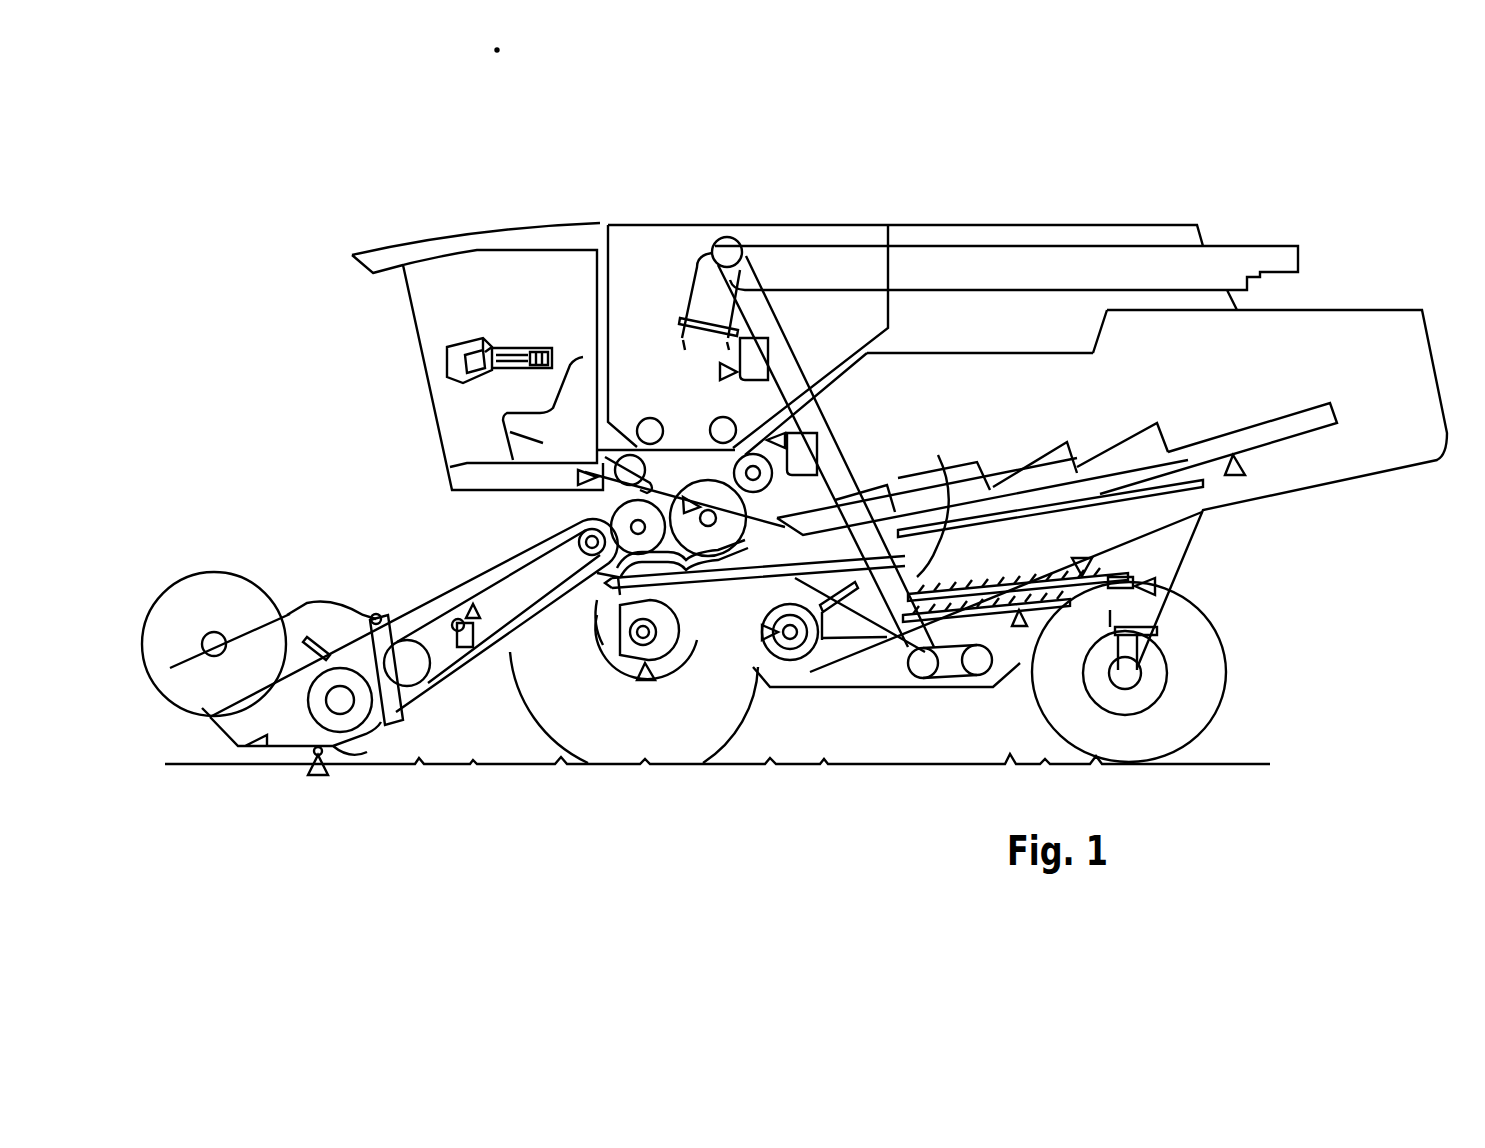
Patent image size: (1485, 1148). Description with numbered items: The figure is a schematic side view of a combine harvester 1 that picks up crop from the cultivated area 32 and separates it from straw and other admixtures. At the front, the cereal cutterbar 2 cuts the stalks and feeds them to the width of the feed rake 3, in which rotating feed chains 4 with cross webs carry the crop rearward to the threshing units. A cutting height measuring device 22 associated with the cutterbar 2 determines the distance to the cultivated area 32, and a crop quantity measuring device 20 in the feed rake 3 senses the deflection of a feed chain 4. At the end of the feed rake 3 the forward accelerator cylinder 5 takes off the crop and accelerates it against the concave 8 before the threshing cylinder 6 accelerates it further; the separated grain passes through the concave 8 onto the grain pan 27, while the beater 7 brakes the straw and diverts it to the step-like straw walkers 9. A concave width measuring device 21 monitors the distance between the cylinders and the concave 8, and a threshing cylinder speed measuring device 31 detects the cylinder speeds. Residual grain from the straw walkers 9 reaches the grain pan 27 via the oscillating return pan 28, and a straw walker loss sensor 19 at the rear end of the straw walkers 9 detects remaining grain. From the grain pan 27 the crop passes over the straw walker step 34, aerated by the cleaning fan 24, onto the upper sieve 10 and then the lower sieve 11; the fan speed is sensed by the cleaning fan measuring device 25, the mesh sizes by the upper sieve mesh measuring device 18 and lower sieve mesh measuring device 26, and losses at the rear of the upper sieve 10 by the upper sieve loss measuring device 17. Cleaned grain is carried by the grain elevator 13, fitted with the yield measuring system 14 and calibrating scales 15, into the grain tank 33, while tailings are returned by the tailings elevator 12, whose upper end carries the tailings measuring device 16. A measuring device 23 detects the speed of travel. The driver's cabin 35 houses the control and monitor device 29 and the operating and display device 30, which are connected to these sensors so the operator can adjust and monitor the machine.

The combine harvester 1 is at (388, 236).
The cereal cutterbar 2 is at (295, 600).
The feed rake 3 is at (455, 588).
The feed chains 4 is at (497, 570).
The forward accelerator cylinder 5 is at (627, 520).
The threshing cylinder 6 is at (713, 486).
The beater 7 is at (745, 462).
The concave 8 is at (690, 565).
The straw walkers 9 is at (1053, 463).
The upper sieve 10 is at (1008, 582).
The lower sieve 11 is at (1063, 610).
The tailings elevator 12 is at (955, 662).
The grain elevator 13 is at (907, 650).
The yield measuring system 14 is at (718, 372).
The calibrating scales 15 is at (775, 427).
The tailings measuring device 16 is at (577, 478).
The upper sieve loss measuring device 17 is at (1157, 587).
The upper sieve mesh measuring device 18 is at (1080, 557).
The straw walker loss sensor 19 is at (1237, 476).
The crop quantity measuring device 20 is at (473, 620).
The concave width measuring device 21 is at (610, 640).
The cutting height measuring device 22 is at (318, 775).
The measuring device for detecting the speed of travel 23 is at (645, 682).
The cleaning fan 24 is at (790, 650).
The cleaning fan measuring device 25 is at (762, 634).
The lower sieve mesh measuring device 26 is at (1019, 628).
The grain pan 27 is at (747, 583).
The return pan 28 is at (1103, 498).
The control and monitor device 29 is at (458, 343).
The operating and display device 30 is at (522, 350).
The threshing cylinder speed measuring device 31 is at (684, 500).
The cultivated area 32 is at (467, 768).
The grain tank 33 is at (653, 242).
The straw walker step 34 is at (940, 498).
The driver's cabin 35 is at (475, 263).